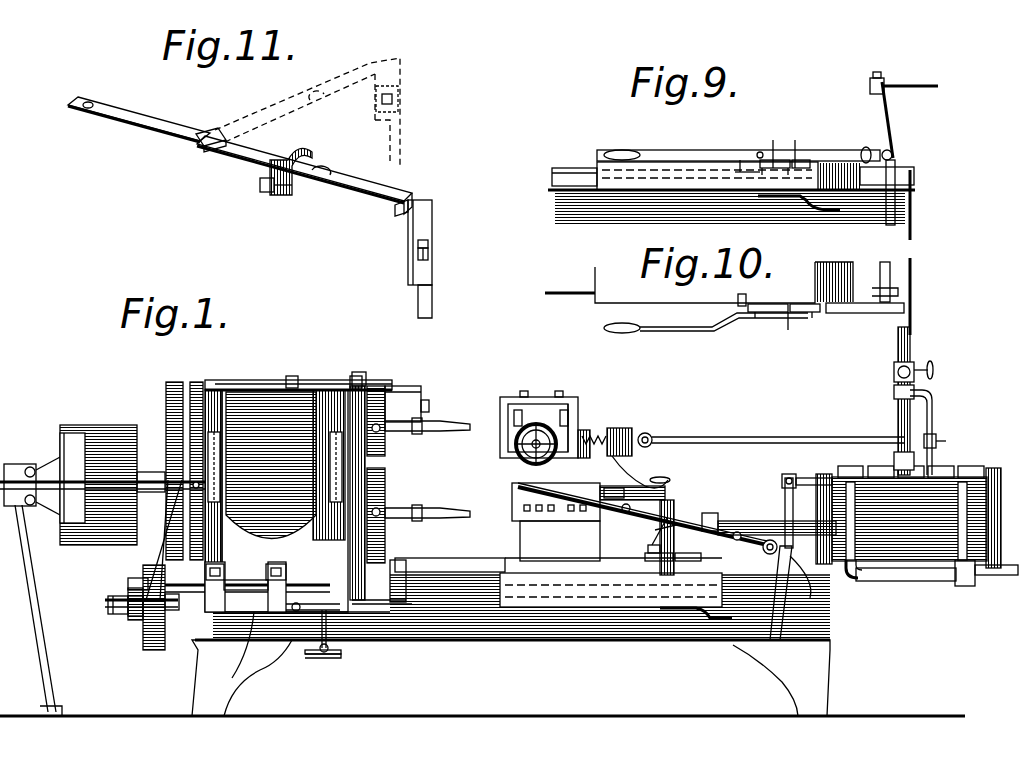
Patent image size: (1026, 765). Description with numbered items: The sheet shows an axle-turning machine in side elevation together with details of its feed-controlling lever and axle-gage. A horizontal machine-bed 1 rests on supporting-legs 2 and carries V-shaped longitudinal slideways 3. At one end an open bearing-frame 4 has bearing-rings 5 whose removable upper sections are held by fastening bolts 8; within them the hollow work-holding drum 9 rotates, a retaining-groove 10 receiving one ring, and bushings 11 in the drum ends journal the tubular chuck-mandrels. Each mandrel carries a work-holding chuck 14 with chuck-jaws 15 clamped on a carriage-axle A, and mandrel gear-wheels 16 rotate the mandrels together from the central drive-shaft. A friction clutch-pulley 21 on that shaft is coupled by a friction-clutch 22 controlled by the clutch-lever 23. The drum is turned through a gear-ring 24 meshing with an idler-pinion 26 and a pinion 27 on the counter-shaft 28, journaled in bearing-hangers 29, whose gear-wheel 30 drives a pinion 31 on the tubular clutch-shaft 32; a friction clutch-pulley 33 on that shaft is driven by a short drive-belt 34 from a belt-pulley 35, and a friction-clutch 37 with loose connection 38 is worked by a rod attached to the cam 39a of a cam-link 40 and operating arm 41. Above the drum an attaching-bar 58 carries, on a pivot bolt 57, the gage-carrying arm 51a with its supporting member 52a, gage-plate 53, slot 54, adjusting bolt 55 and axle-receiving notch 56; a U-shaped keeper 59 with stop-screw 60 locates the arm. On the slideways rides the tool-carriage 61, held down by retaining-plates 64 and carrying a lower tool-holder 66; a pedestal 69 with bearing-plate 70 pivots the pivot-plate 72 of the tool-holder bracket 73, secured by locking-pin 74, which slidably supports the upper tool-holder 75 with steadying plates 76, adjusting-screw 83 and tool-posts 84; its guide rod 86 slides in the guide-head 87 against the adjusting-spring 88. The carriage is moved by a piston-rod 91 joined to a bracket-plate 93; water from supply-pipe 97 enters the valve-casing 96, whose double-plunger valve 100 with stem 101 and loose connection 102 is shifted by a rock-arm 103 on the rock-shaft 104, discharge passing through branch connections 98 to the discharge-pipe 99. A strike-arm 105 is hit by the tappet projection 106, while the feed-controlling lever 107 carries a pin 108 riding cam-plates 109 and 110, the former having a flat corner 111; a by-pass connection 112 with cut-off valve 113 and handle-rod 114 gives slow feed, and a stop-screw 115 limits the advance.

In FIG. 9, the machine-bed 1 is at (912, 226).
In FIG. 10, the machine-bed 1 is at (680, 282).
In FIG. 1, the machine-bed 1 is at (528, 625).
In FIG. 1, the supporting-legs 2 is at (224, 688).
In FIG. 9, the longitudinal slideways 3 is at (576, 168).
In FIG. 1, the longitudinal slideways 3 is at (462, 564).
In FIG. 1, the bearing-frame 4 is at (300, 575).
In FIG. 1, the bearing-rings 5 is at (214, 388).
In FIG. 1, the fastening screws or bolts 8 is at (212, 458).
In FIG. 1, the work-holding drum 9 is at (271, 465).
In FIG. 1, the annular retaining-groove 10 is at (320, 382).
In FIG. 1, the bearing-bushings 11 is at (340, 458).
In FIG. 1, the work-holding chuck 14 is at (382, 412).
In FIG. 1, the chuck-jaws 15 is at (164, 540).
In FIG. 1, the mandrel gear-wheels 16 is at (172, 382).
In FIG. 1, the friction clutch-pulley 21 is at (106, 426).
In FIG. 1, the friction-clutch 22 is at (70, 434).
In FIG. 1, the clutch-lever 23 is at (48, 508).
In FIG. 1, the gear-ring 24 is at (196, 382).
In FIG. 1, the idler-pinion 26 is at (208, 568).
In FIG. 1, the pinion 27 is at (190, 640).
In FIG. 1, the counter-shaft 28 is at (246, 582).
In FIG. 1, the bearing-hangers 29 is at (282, 568).
In FIG. 1, the gear-wheel 30 is at (138, 590).
In FIG. 1, the pinion 31 is at (172, 610).
In FIG. 1, the tubular clutch-shaft 32 is at (240, 660).
In FIG. 1, the friction clutch-pulley 33 is at (138, 578).
In FIG. 1, the drive-belt 34 is at (152, 652).
In FIG. 1, the belt-pulley 35 is at (150, 470).
In FIG. 1, the friction-clutch 37 is at (128, 616).
In FIG. 1, the loose connection 38 is at (114, 616).
In FIG. 1, the cam 39a is at (318, 656).
In FIG. 1, the cam-link 40 is at (300, 602).
In FIG. 1, the operating arm or rod 41 is at (344, 656).
In FIG. 11, the gage-carrying arm 51a is at (390, 192).
In FIG. 1, the gage-carrying arm 51a is at (410, 386).
In FIG. 11, the supporting member 52a is at (405, 214).
In FIG. 11, the gage-plate 53 is at (428, 222).
In FIG. 1, the gage-plate 53 is at (424, 394).
In FIG. 11, the slot 54 is at (428, 244).
In FIG. 11, the adjusting bolt or screw 55 is at (430, 255).
In FIG. 1, the adjusting bolt or screw 55 is at (432, 405).
In FIG. 11, the axle-receiving notch 56 is at (416, 302).
In FIG. 11, the pivot bolt 57 is at (210, 132).
In FIG. 11, the attaching-bar 58 is at (143, 118).
In FIG. 1, the attaching-bar 58 is at (262, 385).
In FIG. 11, the U-shaped keeper 59 is at (296, 156).
In FIG. 1, the U-shaped keeper 59 is at (359, 374).
In FIG. 11, the stop-screw 60 is at (266, 192).
In FIG. 9, the tool-carriage 61 is at (624, 188).
In FIG. 10, the tool-carriage 61 is at (818, 282).
In FIG. 1, the tool-carriage 61 is at (611, 590).
In FIG. 9, the retaining-plates 64 is at (690, 194).
In FIG. 1, the lower tool-holder 66 is at (512, 505).
In FIG. 1, the pedestal 69 is at (656, 537).
In FIG. 1, the bearing-plate 70 is at (614, 482).
In FIG. 1, the pivot-plate 72 is at (632, 486).
In FIG. 1, the tool-holder bracket 73 is at (592, 434).
In FIG. 1, the locking-pin 74 is at (660, 478).
In FIG. 1, the upper tool-holder 75 is at (546, 404).
In FIG. 1, the axle-steadying plates 76 is at (558, 404).
In FIG. 1, the adjusting-screw connection 83 is at (520, 456).
In FIG. 1, the tool-posts 84 is at (568, 410).
In FIG. 1, the guide rod or bolt 86 is at (648, 433).
In FIG. 1, the socketed guide-head 87 is at (625, 432).
In FIG. 1, the adjusting-spring 88 is at (618, 428).
In FIG. 1, the piston-rod 91 is at (754, 528).
In FIG. 1, the bracket-plate 93 is at (714, 514).
In FIG. 1, the valve-casing 96 is at (946, 472).
In FIG. 1, the water-supply pipe 97 is at (898, 413).
In FIG. 1, the branch discharge-pipe connections 98 is at (838, 566).
In FIG. 1, the discharge-pipe 99 is at (1004, 576).
In FIG. 1, the double-plunger valve 100 is at (870, 467).
In FIG. 9, the valve stem 101 is at (926, 90).
In FIG. 1, the valve stem 101 is at (810, 478).
In FIG. 9, the loose connection 102 is at (875, 90).
In FIG. 1, the loose connection 102 is at (782, 482).
In FIG. 1, the rock-arm 103 is at (786, 508).
In FIG. 9, the rock-shaft 104 is at (896, 160).
In FIG. 10, the rock-shaft 104 is at (884, 270).
In FIG. 1, the rock-shaft 104 is at (812, 590).
In FIG. 9, the strike-arm 105 is at (906, 210).
In FIG. 10, the strike-arm 105 is at (906, 309).
In FIG. 1, the strike-arm 105 is at (776, 612).
In FIG. 9, the tappet projection 106 is at (822, 212).
In FIG. 1, the tappet projection 106 is at (720, 619).
In FIG. 9, the feed-controlling lever 107 is at (678, 150).
In FIG. 10, the feed-controlling lever 107 is at (690, 332).
In FIG. 1, the feed-controlling lever 107 is at (664, 528).
In FIG. 9, the pin 108 is at (742, 164).
In FIG. 10, the pin 108 is at (740, 298).
In FIG. 1, the pin 108 is at (626, 512).
In FIG. 9, the cam-plate 109 is at (762, 150).
In FIG. 10, the cam-plate 109 is at (760, 314).
In FIG. 1, the cam-plate 109 is at (660, 560).
In FIG. 9, the cam-plate 110 is at (800, 150).
In FIG. 10, the cam-plate 110 is at (812, 314).
In FIG. 1, the cam-plate 110 is at (694, 560).
In FIG. 9, the flat corner 111 is at (775, 145).
In FIG. 10, the flat corner 111 is at (788, 330).
In FIG. 1, the flat corner 111 is at (670, 524).
In FIG. 1, the by-pass connection 112 is at (934, 413).
In FIG. 1, the cut-off valve 113 is at (938, 440).
In FIG. 1, the handle-rod connection 114 is at (722, 436).
In FIG. 1, the stop-screw 115 is at (398, 562).
In FIG. 1, the carriage-axle A is at (427, 461).